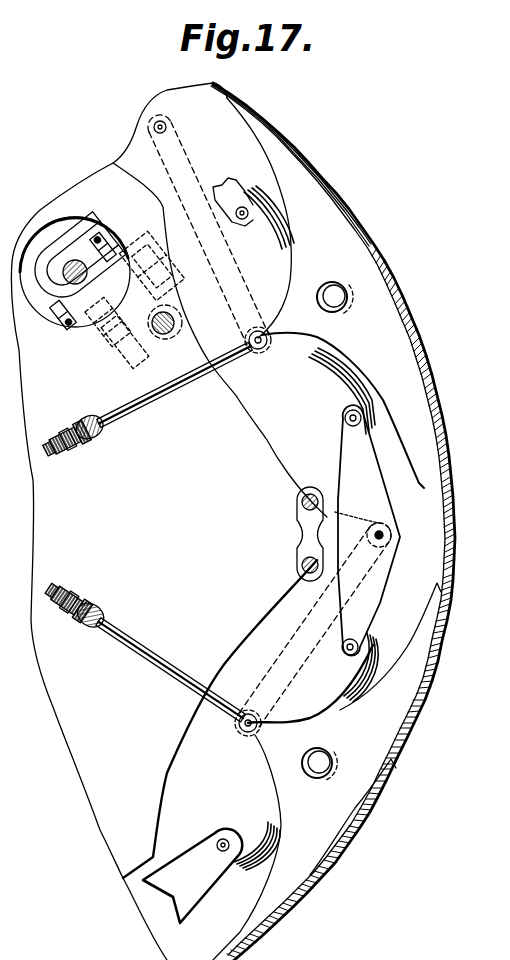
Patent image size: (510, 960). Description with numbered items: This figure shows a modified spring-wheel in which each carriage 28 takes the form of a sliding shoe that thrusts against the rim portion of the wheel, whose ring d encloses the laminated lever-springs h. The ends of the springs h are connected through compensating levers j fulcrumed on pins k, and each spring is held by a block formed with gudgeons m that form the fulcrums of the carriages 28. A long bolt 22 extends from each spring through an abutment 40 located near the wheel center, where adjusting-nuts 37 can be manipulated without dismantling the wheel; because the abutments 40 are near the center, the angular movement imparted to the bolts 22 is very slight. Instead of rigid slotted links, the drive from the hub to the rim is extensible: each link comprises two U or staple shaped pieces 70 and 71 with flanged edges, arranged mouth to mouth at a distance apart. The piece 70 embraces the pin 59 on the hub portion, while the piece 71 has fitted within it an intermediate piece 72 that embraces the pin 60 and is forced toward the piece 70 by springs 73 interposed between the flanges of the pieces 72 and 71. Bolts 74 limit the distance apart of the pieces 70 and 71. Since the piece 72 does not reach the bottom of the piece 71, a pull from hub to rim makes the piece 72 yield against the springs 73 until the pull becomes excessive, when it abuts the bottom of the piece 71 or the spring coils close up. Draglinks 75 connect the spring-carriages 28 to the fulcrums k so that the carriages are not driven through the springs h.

The bolt 22 is at (170, 380).
The carriage 28 is at (345, 571).
The adjusting-nut 37 is at (70, 455).
The abutment 40 is at (104, 432).
The pin 59 is at (162, 336).
The pin 60 is at (50, 312).
The U-shaped piece 70 is at (184, 312).
The U-shaped piece 71 is at (48, 250).
The intermediate piece 72 is at (97, 340).
The spring 73 is at (140, 255).
The bolt 74 is at (106, 235).
The draglink 75 is at (232, 262).
The ring d is at (354, 866).
The laminated lever-spring h is at (335, 368).
The compensating lever j is at (271, 533).
The fulcrum pin k is at (379, 523).
The gudgeon m is at (334, 292).